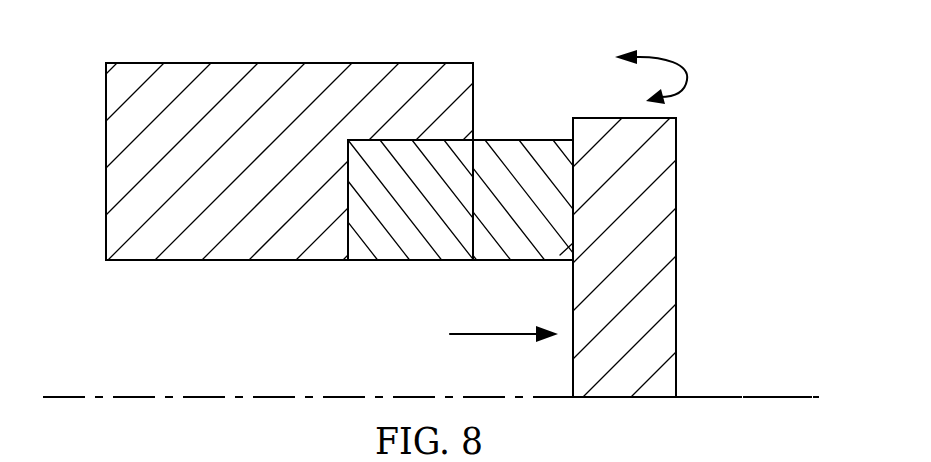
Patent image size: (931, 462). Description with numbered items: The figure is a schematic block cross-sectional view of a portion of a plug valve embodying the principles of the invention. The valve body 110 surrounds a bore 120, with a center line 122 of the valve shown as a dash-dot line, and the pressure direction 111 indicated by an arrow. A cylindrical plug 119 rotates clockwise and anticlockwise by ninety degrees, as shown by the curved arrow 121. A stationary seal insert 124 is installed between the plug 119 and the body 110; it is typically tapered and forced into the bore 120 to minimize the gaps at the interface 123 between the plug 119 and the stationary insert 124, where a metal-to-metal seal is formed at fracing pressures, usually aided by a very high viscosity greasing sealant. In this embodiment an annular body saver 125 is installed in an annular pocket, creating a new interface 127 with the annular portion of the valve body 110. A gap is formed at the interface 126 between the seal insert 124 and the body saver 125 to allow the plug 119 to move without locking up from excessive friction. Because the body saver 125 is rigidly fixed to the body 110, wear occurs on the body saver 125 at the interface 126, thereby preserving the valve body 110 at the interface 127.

The body 110 is at (114, 138).
The pressure direction 111 is at (493, 338).
The cylindrical plug 119 is at (665, 188).
The bore 120 is at (248, 375).
The arrow 121 is at (670, 61).
The center line 122 is at (745, 396).
The interface 123 is at (572, 242).
The stationary insert 124 is at (507, 148).
The annular body saver 125 is at (385, 253).
The interface 126 is at (472, 244).
The interface 127 is at (348, 243).